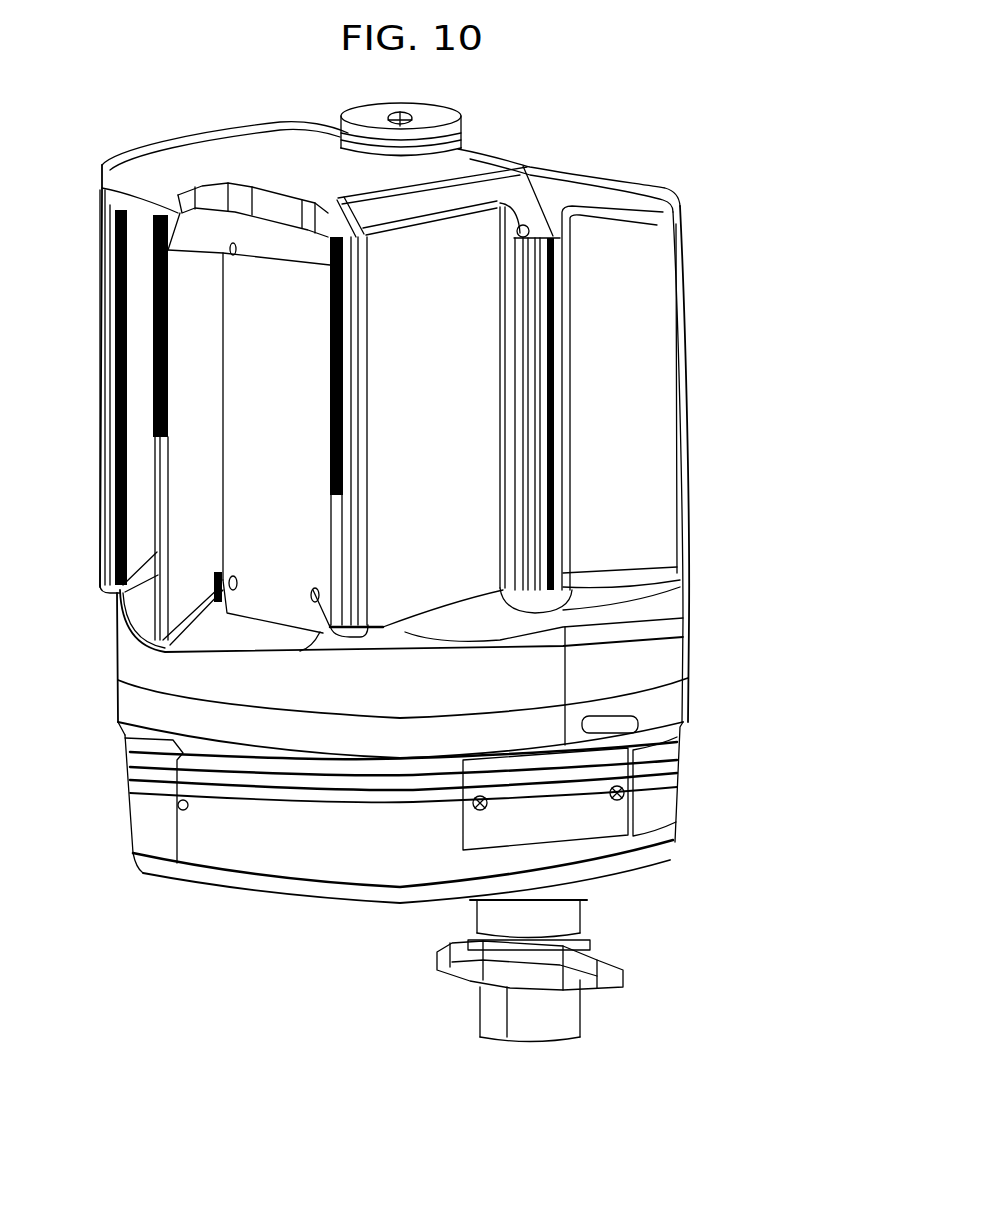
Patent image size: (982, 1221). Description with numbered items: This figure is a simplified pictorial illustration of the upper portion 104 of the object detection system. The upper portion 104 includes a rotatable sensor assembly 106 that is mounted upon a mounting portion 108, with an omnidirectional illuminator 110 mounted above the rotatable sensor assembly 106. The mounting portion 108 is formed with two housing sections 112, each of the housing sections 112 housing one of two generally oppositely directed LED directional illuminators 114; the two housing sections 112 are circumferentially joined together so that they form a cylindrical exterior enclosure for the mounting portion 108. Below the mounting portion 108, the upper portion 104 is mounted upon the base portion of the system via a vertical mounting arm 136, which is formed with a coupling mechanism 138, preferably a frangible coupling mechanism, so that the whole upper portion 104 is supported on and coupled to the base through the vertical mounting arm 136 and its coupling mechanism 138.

The upper portion 104 is at (719, 324).
The rotatable sensor assembly 106 is at (71, 158).
The mounting portion 108 is at (150, 897).
The omnidirectional illuminator 110 is at (461, 122).
The housing section 112 is at (150, 820).
The LED directional illuminator 114 is at (570, 818).
The vertical mounting arm 136 is at (440, 997).
The coupling mechanism 138 is at (560, 913).